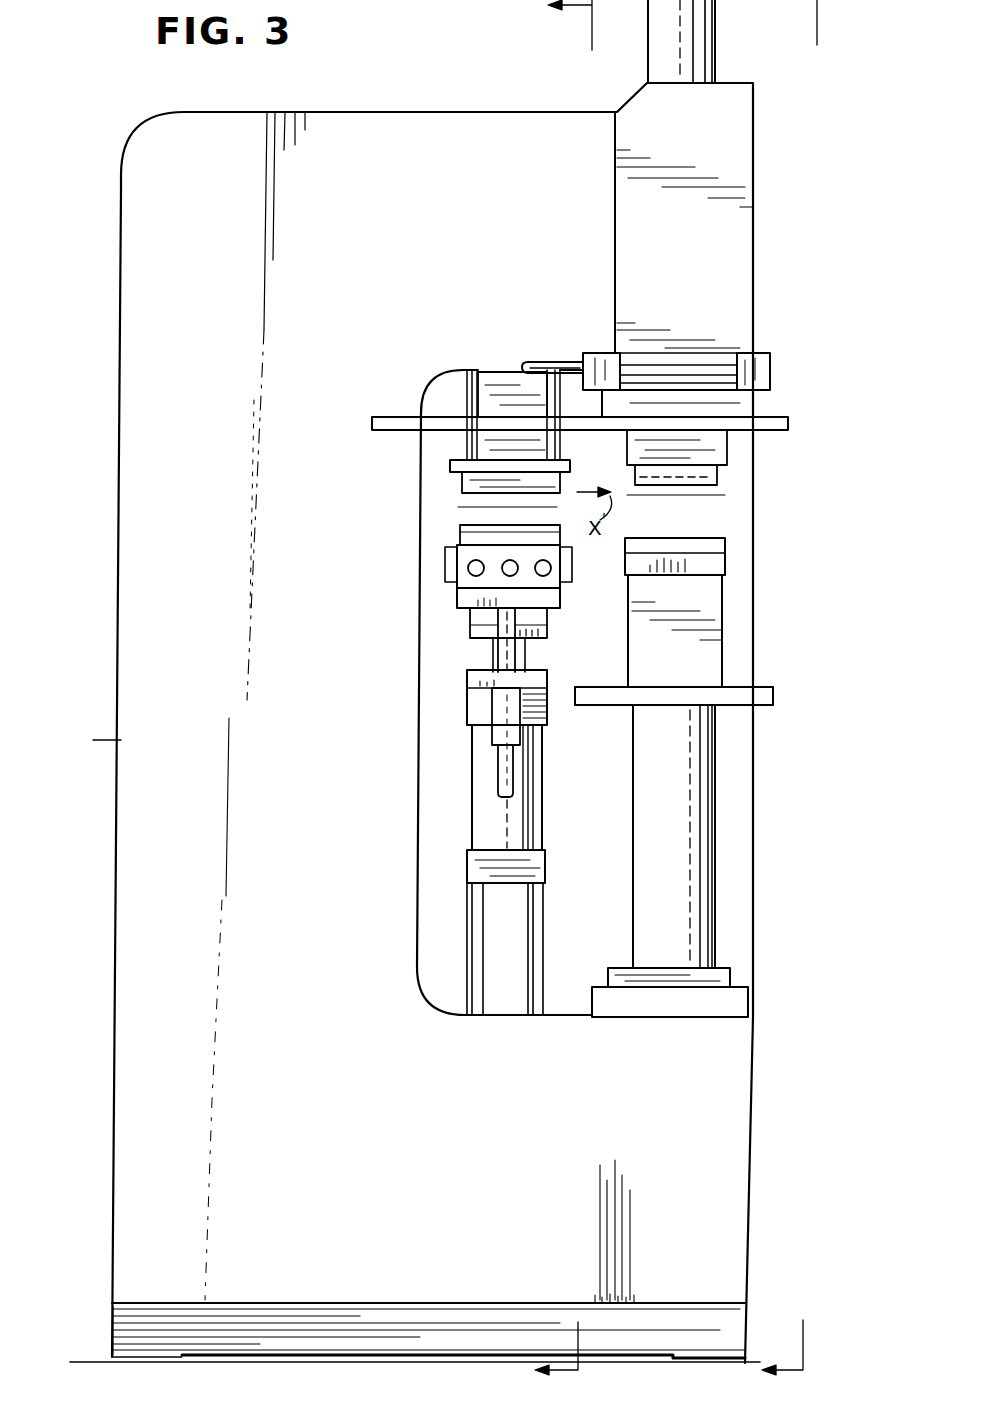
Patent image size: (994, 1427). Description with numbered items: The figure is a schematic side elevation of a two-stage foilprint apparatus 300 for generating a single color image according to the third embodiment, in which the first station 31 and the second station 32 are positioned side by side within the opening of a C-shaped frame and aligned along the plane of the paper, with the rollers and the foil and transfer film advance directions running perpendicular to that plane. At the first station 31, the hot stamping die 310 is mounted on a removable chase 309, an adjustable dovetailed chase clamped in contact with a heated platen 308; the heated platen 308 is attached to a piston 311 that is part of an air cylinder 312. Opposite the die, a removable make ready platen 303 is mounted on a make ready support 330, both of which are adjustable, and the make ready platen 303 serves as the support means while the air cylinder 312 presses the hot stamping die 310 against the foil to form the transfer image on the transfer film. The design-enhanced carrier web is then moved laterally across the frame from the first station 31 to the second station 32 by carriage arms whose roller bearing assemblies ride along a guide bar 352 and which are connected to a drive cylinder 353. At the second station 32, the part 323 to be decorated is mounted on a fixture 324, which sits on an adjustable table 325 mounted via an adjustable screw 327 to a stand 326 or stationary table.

The two-stage foilprint apparatus 300 is at (131, 129).
The first station 31 is at (497, 150).
The second station 32 is at (722, 275).
The drive cylinder 353 is at (708, 368).
The guide bar 352 is at (775, 432).
The make ready support 330 is at (495, 437).
The removable make ready platen 303 is at (470, 474).
The hot stamping die 310 is at (470, 533).
The removable chase 309 is at (460, 545).
The heated platen 308 is at (493, 573).
The piston 311 is at (493, 652).
The air cylinder 312 is at (485, 762).
The part 323 is at (724, 566).
The fixture 324 is at (710, 652).
The adjustable table 325 is at (752, 706).
The adjustable screw 327 is at (697, 885).
The stand 326 is at (725, 1000).